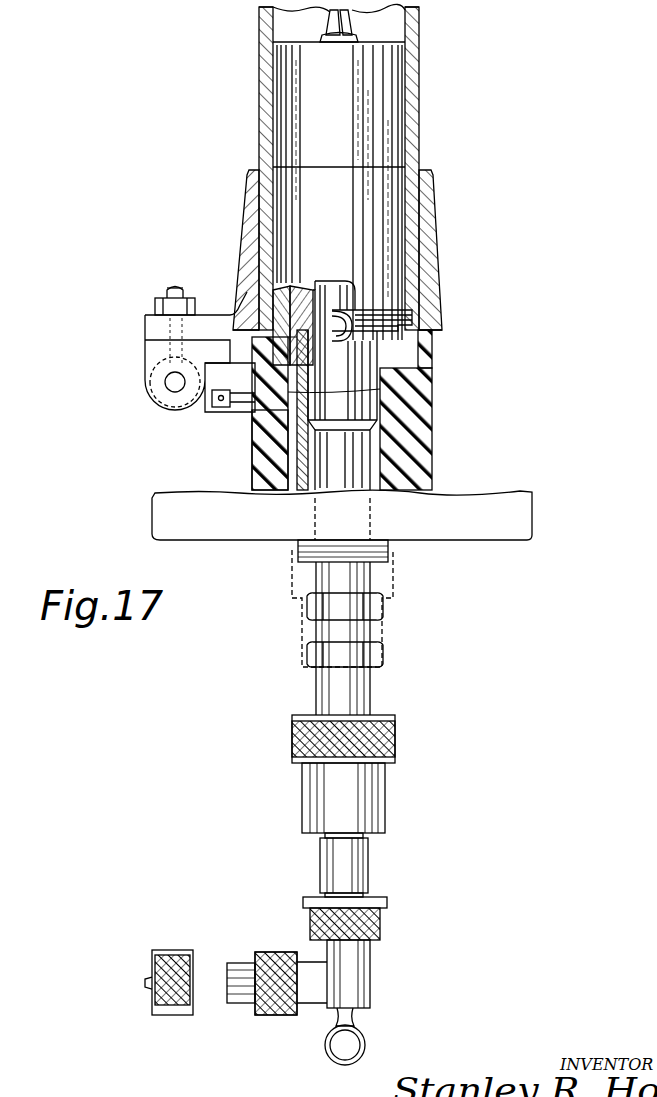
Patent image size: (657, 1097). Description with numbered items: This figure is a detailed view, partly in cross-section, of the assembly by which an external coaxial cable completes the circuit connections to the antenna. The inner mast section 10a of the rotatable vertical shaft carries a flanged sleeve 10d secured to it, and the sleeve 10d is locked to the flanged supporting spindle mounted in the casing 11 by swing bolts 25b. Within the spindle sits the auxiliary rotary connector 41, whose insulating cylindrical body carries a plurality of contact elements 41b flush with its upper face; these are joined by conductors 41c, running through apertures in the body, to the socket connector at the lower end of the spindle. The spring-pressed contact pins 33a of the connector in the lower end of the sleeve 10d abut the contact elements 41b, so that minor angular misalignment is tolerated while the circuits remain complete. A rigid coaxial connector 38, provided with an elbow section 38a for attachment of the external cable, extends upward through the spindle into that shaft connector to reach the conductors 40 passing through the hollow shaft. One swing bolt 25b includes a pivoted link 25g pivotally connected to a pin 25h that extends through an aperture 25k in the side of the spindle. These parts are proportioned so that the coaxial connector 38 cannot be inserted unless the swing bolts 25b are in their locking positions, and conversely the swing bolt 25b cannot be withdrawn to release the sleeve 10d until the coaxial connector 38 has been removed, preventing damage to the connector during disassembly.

The conductors 40 is at (357, 27).
The inner mast section 10a is at (422, 101).
The flanged sleeve 10d is at (440, 262).
The contact pins 33a is at (288, 296).
The swing bolt 25b is at (172, 284).
The aperture 25k is at (218, 311).
The pivoted link 25g is at (208, 408).
The pin 25h is at (243, 407).
The auxiliary rotary connector 41 is at (432, 402).
The contact elements 41b is at (432, 378).
The conductors 41c is at (252, 478).
The casing 11 is at (497, 530).
The rigid coaxial connector 38 is at (372, 802).
The elbow section 38a is at (372, 966).